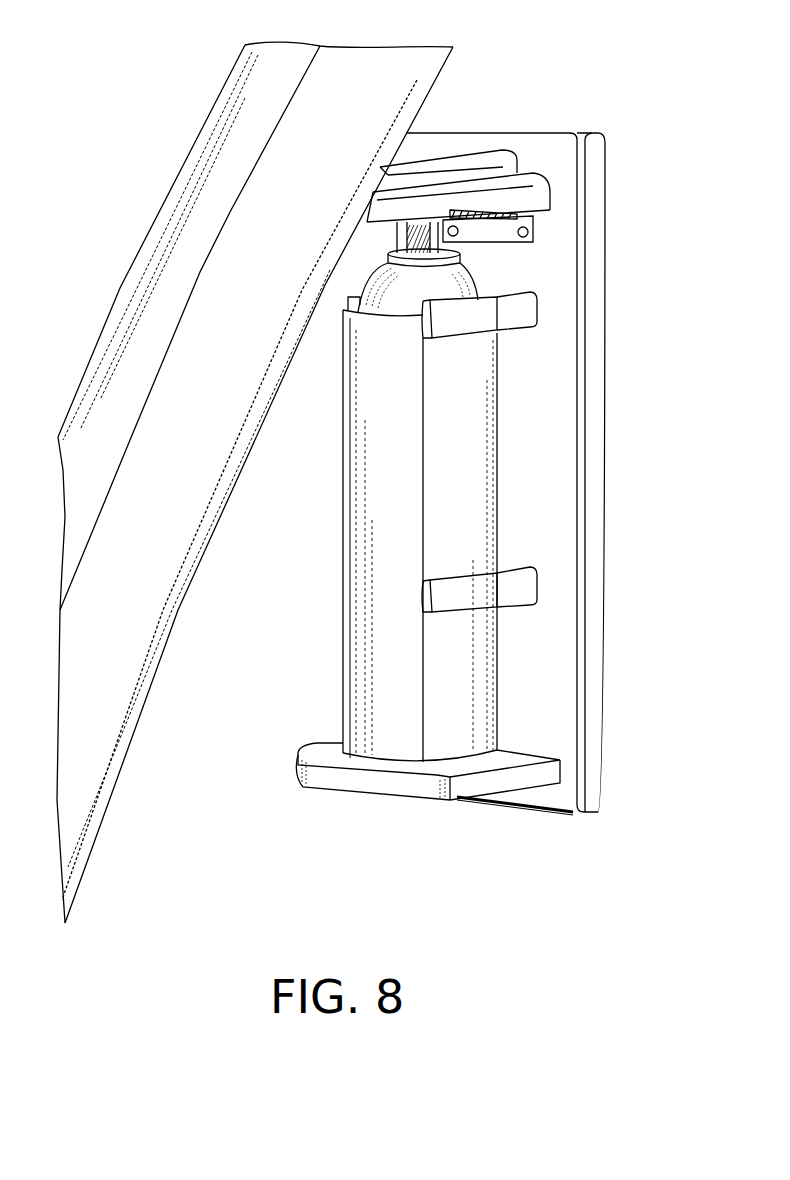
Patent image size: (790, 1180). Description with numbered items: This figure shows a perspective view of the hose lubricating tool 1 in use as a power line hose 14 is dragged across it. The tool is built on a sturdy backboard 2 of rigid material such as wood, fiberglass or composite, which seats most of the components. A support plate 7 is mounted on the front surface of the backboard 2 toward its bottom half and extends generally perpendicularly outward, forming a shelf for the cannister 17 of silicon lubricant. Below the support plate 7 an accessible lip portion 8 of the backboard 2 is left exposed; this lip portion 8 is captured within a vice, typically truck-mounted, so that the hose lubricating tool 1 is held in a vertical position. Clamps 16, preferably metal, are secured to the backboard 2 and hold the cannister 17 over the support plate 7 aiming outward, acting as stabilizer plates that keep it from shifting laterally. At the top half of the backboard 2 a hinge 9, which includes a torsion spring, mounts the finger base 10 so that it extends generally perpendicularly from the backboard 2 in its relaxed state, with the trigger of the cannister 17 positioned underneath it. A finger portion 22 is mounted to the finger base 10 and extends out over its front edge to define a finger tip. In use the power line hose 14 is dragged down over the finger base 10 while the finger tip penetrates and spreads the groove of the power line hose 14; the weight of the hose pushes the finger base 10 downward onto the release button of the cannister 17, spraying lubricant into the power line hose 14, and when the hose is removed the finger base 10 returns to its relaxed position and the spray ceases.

The hose lubricating tool 1 is at (592, 238).
The backboard 2 is at (548, 398).
The support plate 7 is at (367, 780).
The lip portion 8 is at (550, 798).
The hinge 9 is at (518, 222).
The finger base 10 is at (477, 193).
The power line hose 14 is at (228, 203).
The clamps 16 is at (470, 600).
The cannister 17 is at (470, 548).
The finger portion 22 is at (427, 165).